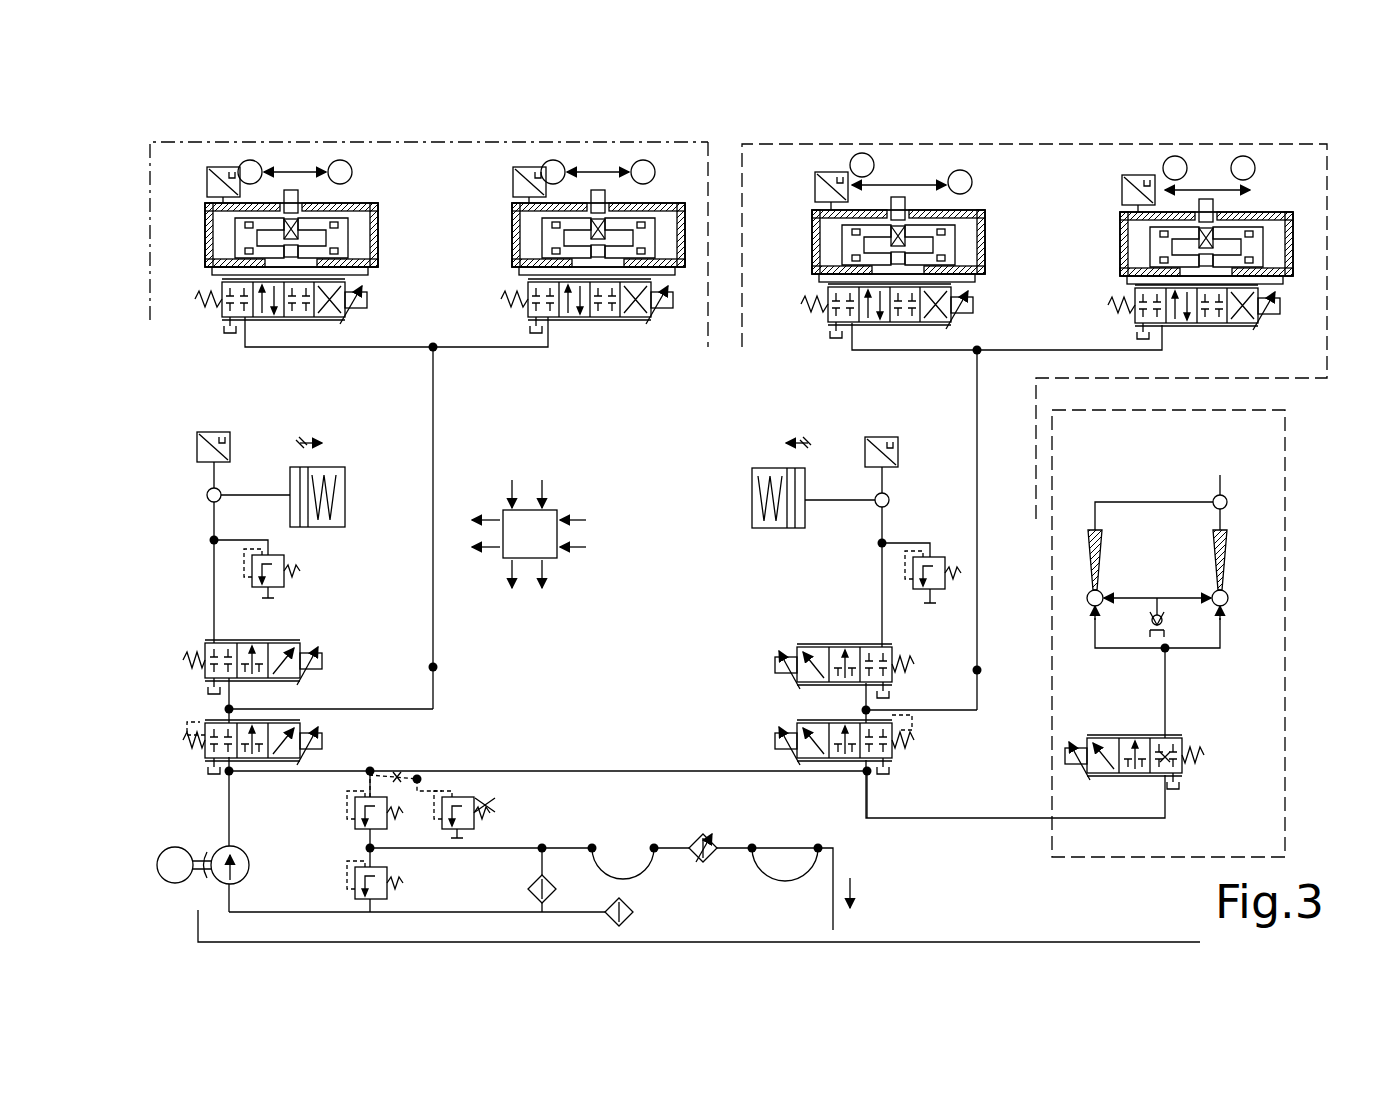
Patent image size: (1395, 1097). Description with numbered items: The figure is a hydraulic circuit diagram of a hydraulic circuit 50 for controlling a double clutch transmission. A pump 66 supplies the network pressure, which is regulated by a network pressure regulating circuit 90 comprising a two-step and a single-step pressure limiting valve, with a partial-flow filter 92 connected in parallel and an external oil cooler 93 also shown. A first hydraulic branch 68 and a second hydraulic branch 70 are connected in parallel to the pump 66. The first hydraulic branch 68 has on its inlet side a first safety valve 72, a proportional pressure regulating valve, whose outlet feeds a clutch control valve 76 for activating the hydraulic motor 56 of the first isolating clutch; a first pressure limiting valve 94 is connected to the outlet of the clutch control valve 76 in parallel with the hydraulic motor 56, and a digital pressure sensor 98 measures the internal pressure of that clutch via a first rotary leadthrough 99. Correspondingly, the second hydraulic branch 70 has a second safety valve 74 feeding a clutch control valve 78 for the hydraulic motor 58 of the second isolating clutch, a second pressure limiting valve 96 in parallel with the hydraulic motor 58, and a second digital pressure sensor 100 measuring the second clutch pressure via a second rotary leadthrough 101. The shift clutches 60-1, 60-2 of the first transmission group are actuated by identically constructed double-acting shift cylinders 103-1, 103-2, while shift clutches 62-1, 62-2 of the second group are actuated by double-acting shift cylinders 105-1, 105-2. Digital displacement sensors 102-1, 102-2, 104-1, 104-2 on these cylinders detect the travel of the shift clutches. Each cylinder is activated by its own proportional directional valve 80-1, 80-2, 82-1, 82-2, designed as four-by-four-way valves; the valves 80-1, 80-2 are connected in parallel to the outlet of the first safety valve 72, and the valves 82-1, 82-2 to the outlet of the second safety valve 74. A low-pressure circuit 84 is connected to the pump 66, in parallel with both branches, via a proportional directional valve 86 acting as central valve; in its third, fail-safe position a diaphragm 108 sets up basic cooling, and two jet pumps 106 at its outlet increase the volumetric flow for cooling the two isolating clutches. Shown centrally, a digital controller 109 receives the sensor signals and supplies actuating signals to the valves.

The hydraulic circuit 50 is at (128, 193).
The hydraulic motor 56 is at (320, 467).
The hydraulic motor 58 is at (760, 468).
The shift clutch 60-1 is at (290, 190).
The shift clutch 60-2 is at (598, 190).
The shift clutch 62-1 is at (900, 197).
The shift clutch 62-2 is at (1208, 197).
The pump 66 is at (250, 858).
The first hydraulic branch 68 is at (415, 140).
The second hydraulic branch 70 is at (870, 142).
The first safety valve 72 is at (185, 750).
The second safety valve 74 is at (775, 742).
The clutch control valve 76 is at (185, 660).
The clutch control valve 78 is at (775, 662).
The proportional directional valve 80-1 is at (205, 326).
The proportional directional valve 80-2 is at (622, 322).
The proportional directional valve 82-1 is at (810, 332).
The proportional directional valve 82-2 is at (1110, 290).
The low-pressure circuit 84 is at (1285, 442).
The proportional directional valve 86 is at (1180, 745).
The network pressure regulating circuit 90 is at (305, 793).
The partial-flow filter 92 is at (532, 884).
The external oil cooler 93 is at (708, 862).
The first pressure limiting valve 94 is at (285, 562).
The second pressure limiting valve 96 is at (947, 560).
The digital pressure sensor 98 is at (215, 432).
The first rotary leadthrough 99 is at (207, 496).
The second digital pressure sensor 100 is at (890, 437).
The second rotary leadthrough 101 is at (889, 498).
The digital displacement sensor 102-1 is at (225, 167).
The digital displacement sensor 102-2 is at (528, 167).
The double-acting shift cylinder 103-1 is at (378, 212).
The double-acting shift cylinder 103-2 is at (655, 210).
The digital displacement sensor 104-1 is at (830, 172).
The digital displacement sensor 104-2 is at (1140, 175).
The double-acting shift cylinder 105-1 is at (985, 218).
The double-acting shift cylinder 105-2 is at (1120, 255).
The jet pumps 106 is at (1100, 555).
The diaphragm 108 is at (1170, 764).
The digital controller 109 is at (539, 533).